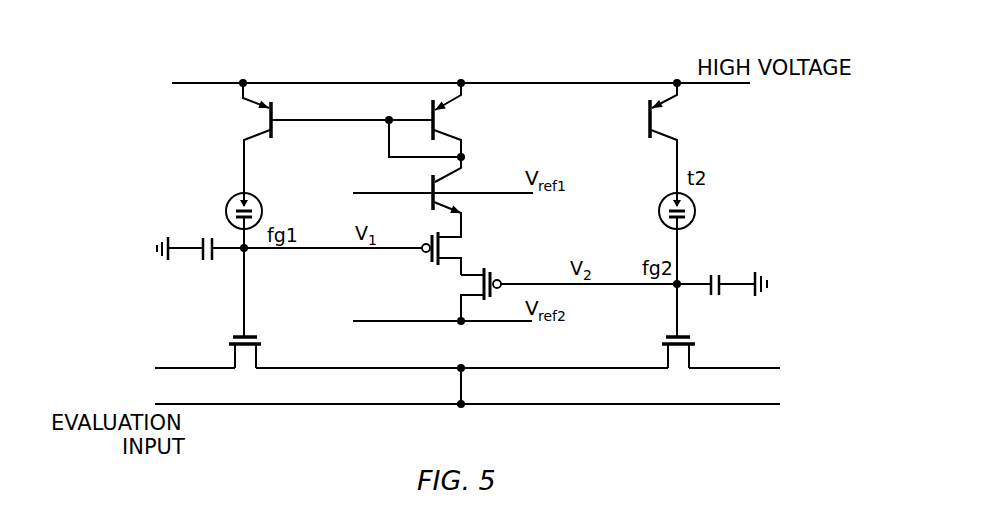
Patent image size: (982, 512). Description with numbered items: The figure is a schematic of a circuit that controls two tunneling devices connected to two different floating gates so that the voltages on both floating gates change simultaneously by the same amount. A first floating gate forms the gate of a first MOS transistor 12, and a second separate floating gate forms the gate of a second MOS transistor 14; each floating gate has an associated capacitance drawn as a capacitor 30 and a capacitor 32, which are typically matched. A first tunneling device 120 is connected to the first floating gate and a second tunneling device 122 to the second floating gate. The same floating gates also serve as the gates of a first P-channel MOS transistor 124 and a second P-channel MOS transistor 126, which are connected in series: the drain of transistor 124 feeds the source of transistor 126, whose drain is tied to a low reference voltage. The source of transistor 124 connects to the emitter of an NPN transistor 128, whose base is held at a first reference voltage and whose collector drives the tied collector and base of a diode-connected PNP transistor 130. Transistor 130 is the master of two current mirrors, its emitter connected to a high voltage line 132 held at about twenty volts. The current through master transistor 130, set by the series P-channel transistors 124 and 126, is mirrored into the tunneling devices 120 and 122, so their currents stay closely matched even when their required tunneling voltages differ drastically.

The high voltage line 132 is at (262, 120).
The diode-connected PNP transistor 130 is at (460, 112).
The NPN transistor 128 is at (453, 185).
The first P-channel MOS transistor 124 is at (453, 249).
The second P-channel MOS transistor 126 is at (467, 286).
The first tunneling device 120 is at (226, 211).
The second tunneling device 122 is at (696, 212).
The first MOS transistor 12 is at (261, 343).
The second MOS transistor 14 is at (664, 340).
The capacitor 30 is at (207, 263).
The capacitor 32 is at (714, 298).